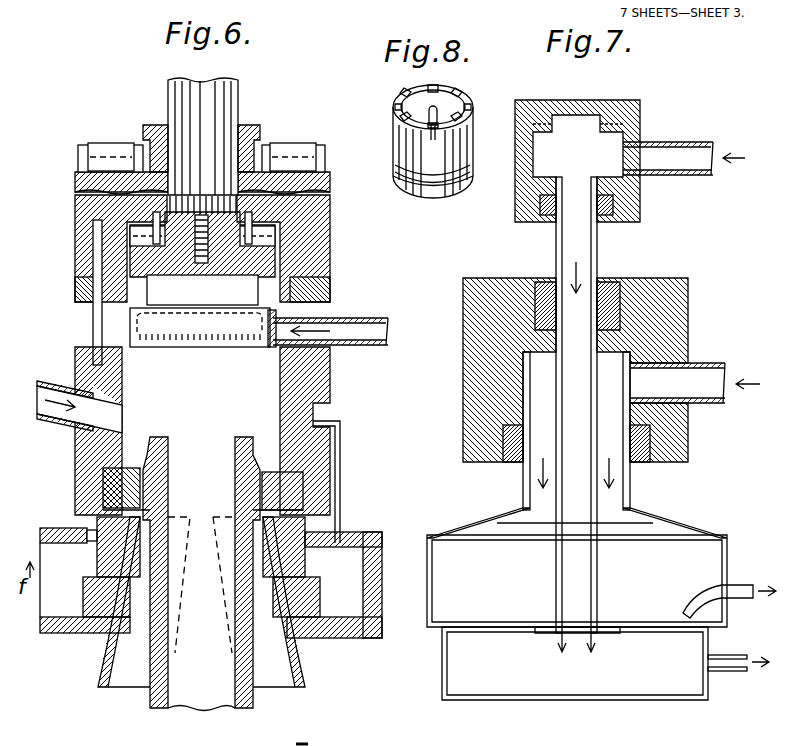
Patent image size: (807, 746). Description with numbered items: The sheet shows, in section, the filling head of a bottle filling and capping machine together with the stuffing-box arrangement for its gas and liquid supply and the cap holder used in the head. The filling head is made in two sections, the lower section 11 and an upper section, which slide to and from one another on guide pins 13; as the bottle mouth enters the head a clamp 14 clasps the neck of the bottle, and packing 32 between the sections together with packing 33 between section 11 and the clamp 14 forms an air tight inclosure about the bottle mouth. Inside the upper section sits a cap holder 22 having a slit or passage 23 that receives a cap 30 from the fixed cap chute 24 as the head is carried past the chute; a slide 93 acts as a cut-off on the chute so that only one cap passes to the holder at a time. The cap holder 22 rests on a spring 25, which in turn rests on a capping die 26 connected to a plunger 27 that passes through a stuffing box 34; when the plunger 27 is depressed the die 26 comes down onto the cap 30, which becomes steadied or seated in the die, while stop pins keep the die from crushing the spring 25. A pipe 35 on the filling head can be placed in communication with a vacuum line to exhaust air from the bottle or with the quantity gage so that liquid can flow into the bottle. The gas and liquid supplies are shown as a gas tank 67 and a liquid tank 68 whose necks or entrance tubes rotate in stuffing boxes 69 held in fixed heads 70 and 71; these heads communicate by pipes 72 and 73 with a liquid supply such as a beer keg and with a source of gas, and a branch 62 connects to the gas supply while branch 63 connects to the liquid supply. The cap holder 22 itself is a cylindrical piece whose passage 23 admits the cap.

In FIG. 6, the filling head section 11 is at (218, 431).
In FIG. 6, the guide pins 13 is at (93, 327).
In FIG. 6, the clamp 14 is at (100, 664).
In FIG. 6, the cap holder 22 is at (133, 348).
In FIG. 8, the cap holder 22 is at (428, 150).
In FIG. 6, the slit or passage 23 is at (276, 316).
In FIG. 8, the slit or passage 23 is at (432, 180).
In FIG. 6, the cap chute 24 is at (388, 331).
In FIG. 6, the spring 25 is at (202, 290).
In FIG. 6, the capping die 26 is at (234, 291).
In FIG. 6, the plunger 27 is at (238, 100).
In FIG. 6, the cap 30 is at (210, 347).
In FIG. 6, the packing 32 is at (75, 292).
In FIG. 6, the packing 33 is at (268, 472).
In FIG. 6, the stuffing box 34 is at (258, 128).
In FIG. 6, the pipe 35 is at (71, 413).
In FIG. 7, the branch 62 is at (738, 649).
In FIG. 7, the branch 63 is at (729, 585).
In FIG. 7, the gas tank 67 is at (575, 663).
In FIG. 7, the liquid tank 68 is at (577, 580).
In FIG. 7, the stuffing boxes 69 is at (599, 282).
In FIG. 7, the fixed head 70 is at (590, 370).
In FIG. 7, the fixed head 71 is at (595, 161).
In FIG. 6, the pipe 72 is at (220, 248).
In FIG. 7, the pipe 72 is at (695, 398).
In FIG. 7, the pipe 73 is at (684, 172).
In FIG. 6, the slide 93 is at (276, 350).